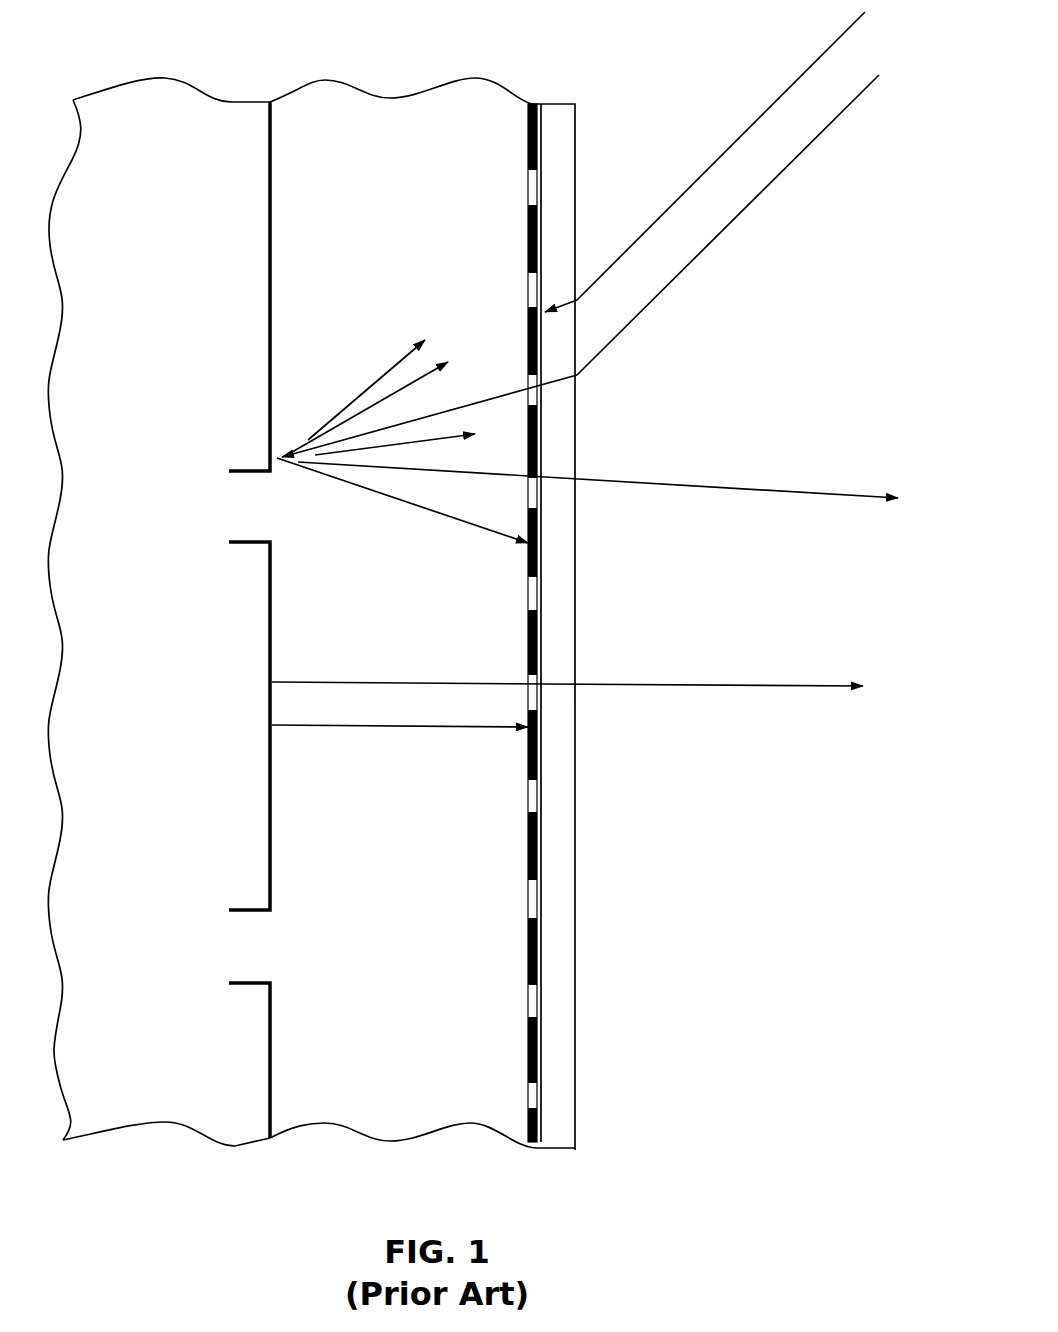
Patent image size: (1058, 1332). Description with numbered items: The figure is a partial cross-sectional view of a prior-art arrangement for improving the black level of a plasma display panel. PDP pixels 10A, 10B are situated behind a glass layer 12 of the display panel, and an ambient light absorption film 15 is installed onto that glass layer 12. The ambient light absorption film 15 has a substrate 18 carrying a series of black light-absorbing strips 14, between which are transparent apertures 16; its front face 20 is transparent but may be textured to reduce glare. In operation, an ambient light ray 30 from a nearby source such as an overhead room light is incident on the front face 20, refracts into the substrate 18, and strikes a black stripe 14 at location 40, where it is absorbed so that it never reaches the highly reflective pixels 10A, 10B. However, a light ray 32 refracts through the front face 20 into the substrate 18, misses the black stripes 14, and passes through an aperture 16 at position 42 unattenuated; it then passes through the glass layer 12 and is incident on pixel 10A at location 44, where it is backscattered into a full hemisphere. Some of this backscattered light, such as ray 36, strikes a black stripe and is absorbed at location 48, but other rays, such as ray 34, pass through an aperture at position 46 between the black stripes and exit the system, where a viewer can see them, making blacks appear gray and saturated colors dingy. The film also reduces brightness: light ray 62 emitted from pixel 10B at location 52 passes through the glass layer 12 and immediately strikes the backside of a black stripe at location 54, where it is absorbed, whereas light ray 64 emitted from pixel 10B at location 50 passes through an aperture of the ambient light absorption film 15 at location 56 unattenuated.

The glass layer 12 is at (322, 128).
The PDP pixel 10A is at (230, 330).
The PDP pixel 10B is at (230, 888).
The black light-absorbing strips 14 is at (525, 127).
The ambient light absorption film 15 is at (549, 651).
The transparent apertures 16 is at (525, 182).
The substrate 18 is at (560, 125).
The front face 20 is at (578, 1050).
The ambient light ray 30 is at (808, 55).
The light ray 32 is at (797, 163).
The ray 34 is at (848, 504).
The ray 36 is at (328, 489).
The location 40 is at (549, 294).
The position 42 is at (549, 387).
The location 44 is at (265, 456).
The position 46 is at (546, 483).
The location 48 is at (527, 553).
The location 50 is at (265, 682).
The location 52 is at (265, 724).
The location 54 is at (527, 739).
The location 56 is at (546, 697).
The light ray 62 is at (325, 742).
The light ray 64 is at (778, 698).